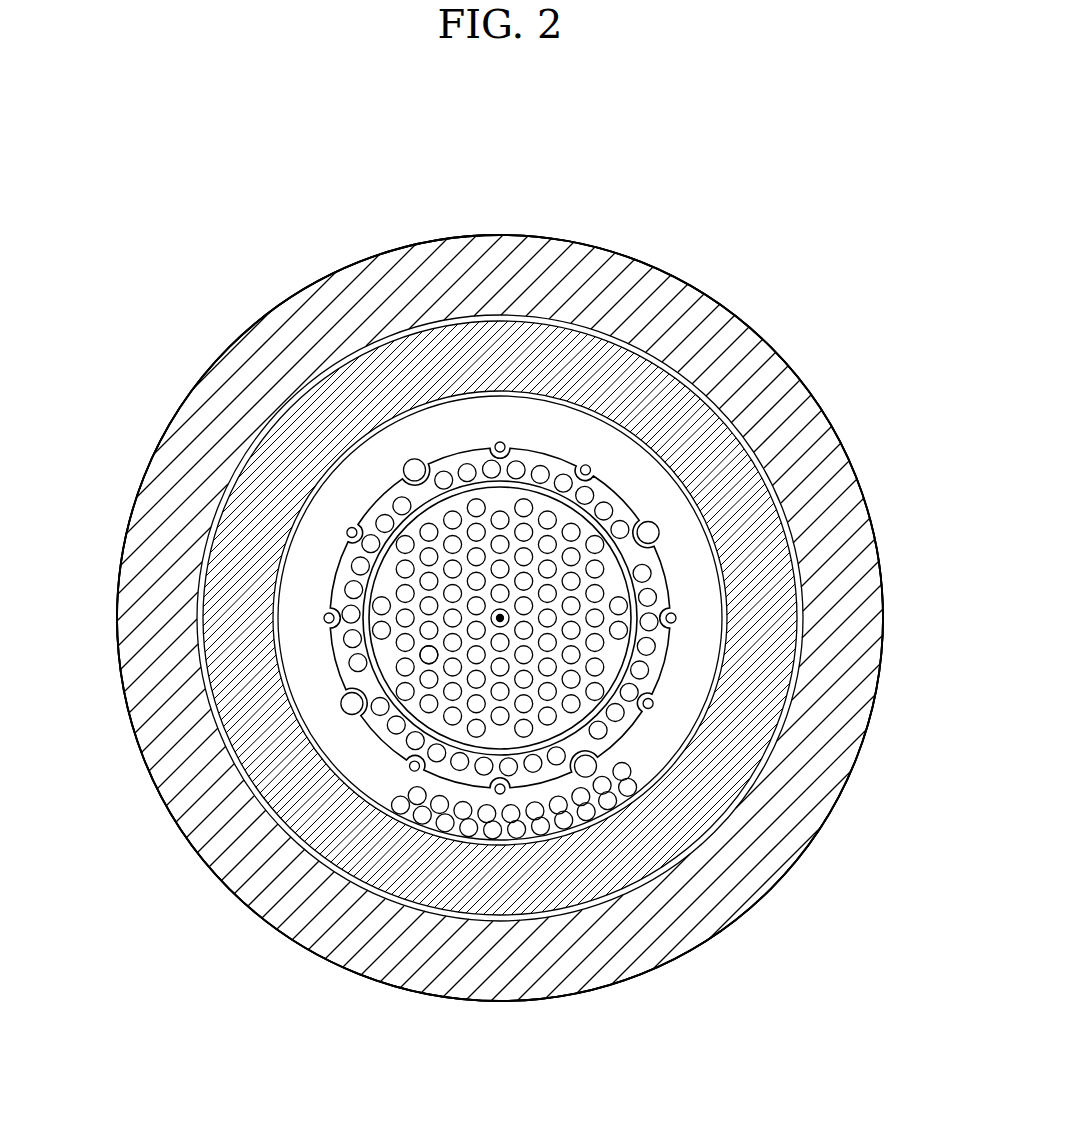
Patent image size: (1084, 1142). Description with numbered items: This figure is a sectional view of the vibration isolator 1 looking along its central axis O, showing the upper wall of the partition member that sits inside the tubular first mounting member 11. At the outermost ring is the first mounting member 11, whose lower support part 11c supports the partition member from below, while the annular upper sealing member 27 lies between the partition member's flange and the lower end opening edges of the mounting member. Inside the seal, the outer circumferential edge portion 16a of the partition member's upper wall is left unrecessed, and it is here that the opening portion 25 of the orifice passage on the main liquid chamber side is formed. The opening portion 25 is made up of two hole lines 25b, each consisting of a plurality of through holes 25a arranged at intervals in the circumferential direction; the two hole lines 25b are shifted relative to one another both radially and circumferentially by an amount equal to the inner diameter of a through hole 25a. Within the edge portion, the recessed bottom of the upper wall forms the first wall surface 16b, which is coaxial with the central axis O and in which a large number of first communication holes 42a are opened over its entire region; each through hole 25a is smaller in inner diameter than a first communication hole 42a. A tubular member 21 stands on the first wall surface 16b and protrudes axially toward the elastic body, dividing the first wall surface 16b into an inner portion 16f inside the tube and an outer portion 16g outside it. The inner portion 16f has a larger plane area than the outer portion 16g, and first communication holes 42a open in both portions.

The vibration isolator 1 is at (855, 147).
The first mounting member 11 is at (500, 581).
The lower support part 11c is at (658, 267).
The upper sealing member 27 is at (716, 415).
The outer circumferential edge portion 16a is at (693, 538).
The first wall surface 16b is at (190, 214).
The inner portion 16f is at (416, 527).
The outer portion 16g is at (341, 550).
The tubular member 21 is at (459, 485).
The central axis O is at (500, 618).
The opening portion 25 is at (916, 815).
The through hole 25a is at (438, 813).
The hole line 25b is at (632, 762).
The first communication hole 42a is at (353, 636).